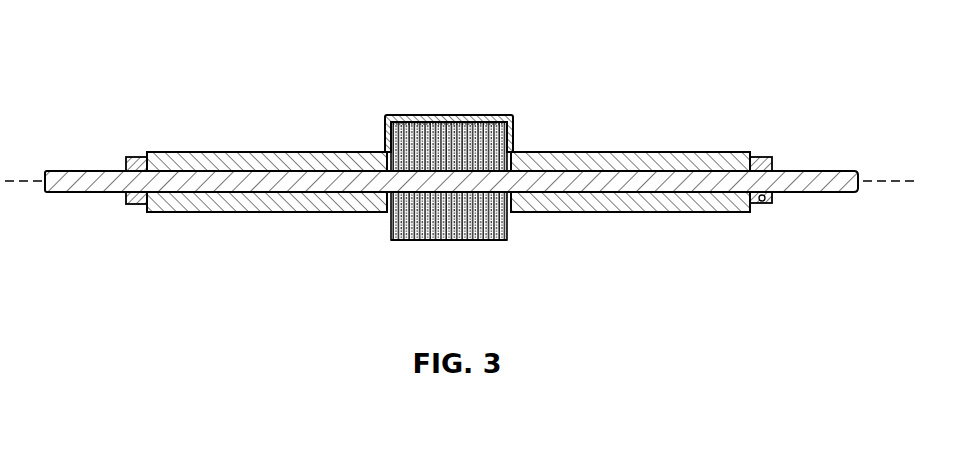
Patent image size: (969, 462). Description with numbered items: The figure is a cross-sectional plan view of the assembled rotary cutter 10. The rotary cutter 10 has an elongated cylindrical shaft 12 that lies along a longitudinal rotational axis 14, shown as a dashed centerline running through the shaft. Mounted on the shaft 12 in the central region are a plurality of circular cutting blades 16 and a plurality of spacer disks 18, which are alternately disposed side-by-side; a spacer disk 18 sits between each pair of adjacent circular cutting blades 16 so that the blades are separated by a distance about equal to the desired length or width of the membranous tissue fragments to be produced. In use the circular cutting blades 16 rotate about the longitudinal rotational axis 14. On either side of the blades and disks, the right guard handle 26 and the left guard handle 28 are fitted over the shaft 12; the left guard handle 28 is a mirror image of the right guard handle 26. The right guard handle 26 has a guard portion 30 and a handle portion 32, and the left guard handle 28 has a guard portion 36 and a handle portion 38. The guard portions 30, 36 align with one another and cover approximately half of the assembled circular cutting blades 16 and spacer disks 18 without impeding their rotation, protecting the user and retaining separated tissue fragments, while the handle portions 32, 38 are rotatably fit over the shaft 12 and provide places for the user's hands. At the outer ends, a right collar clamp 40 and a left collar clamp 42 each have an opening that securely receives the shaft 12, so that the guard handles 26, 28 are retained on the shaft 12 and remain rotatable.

The rotary cutter 10 is at (785, 35).
The cylindrical shaft 12 is at (800, 171).
The longitudinal rotational axis 14 is at (873, 181).
The circular cutting blades 16 is at (397, 240).
The spacer disks 18 is at (401, 240).
The right guard handle 26 is at (700, 152).
The left guard handle 28 is at (227, 152).
The guard portion 30 is at (477, 115).
The handle portion 32 is at (577, 152).
The guard portion 36 is at (412, 115).
The handle portion 38 is at (336, 152).
The right collar clamp 40 is at (762, 157).
The left collar clamp 42 is at (131, 157).